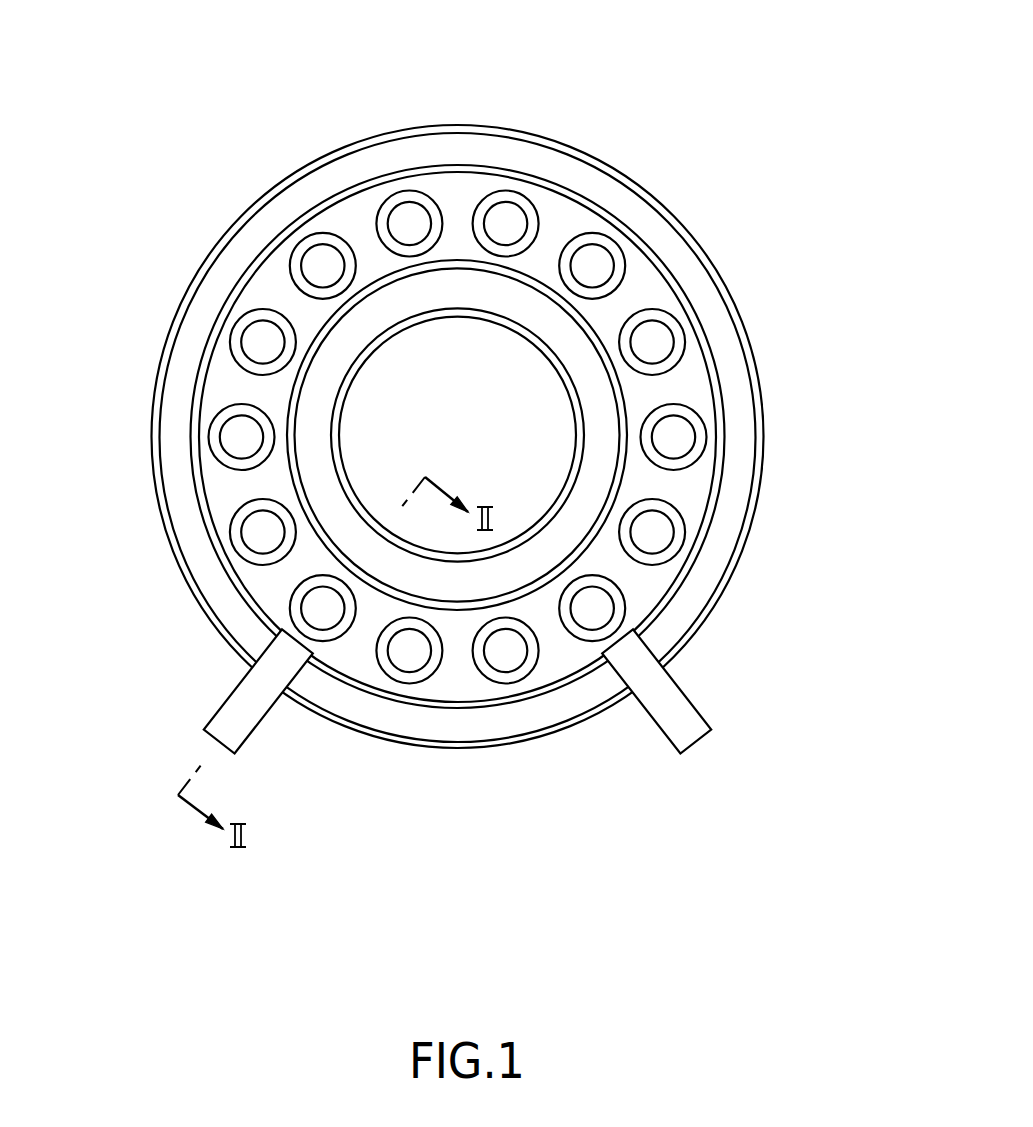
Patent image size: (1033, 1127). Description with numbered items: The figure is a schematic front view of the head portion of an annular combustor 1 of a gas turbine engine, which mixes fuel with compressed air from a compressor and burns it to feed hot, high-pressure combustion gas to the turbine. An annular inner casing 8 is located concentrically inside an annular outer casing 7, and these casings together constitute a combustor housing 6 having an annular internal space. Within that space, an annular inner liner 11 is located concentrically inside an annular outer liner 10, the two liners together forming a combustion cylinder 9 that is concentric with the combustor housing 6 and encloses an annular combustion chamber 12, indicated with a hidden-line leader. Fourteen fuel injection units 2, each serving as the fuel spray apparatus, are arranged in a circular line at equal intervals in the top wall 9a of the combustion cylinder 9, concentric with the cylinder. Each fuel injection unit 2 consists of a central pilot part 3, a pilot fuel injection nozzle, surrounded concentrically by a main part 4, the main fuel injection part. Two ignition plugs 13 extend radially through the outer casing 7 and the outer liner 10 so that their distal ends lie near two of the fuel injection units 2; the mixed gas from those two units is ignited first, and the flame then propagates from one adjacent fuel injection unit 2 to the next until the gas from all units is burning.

The combustor 1 is at (700, 117).
The fuel injection unit 2 is at (456, 349).
The pilot part 3 is at (498, 215).
The main part 4 is at (520, 200).
The combustor housing 6 is at (458, 498).
The outer casing 7 is at (523, 737).
The inner casing 8 is at (509, 545).
The combustion cylinder 9 is at (458, 515).
The top wall 9a is at (456, 687).
The outer liner 10 is at (397, 703).
The inner liner 11 is at (375, 598).
The combustion chamber 12 is at (628, 302).
The ignition plug 13 is at (228, 697).